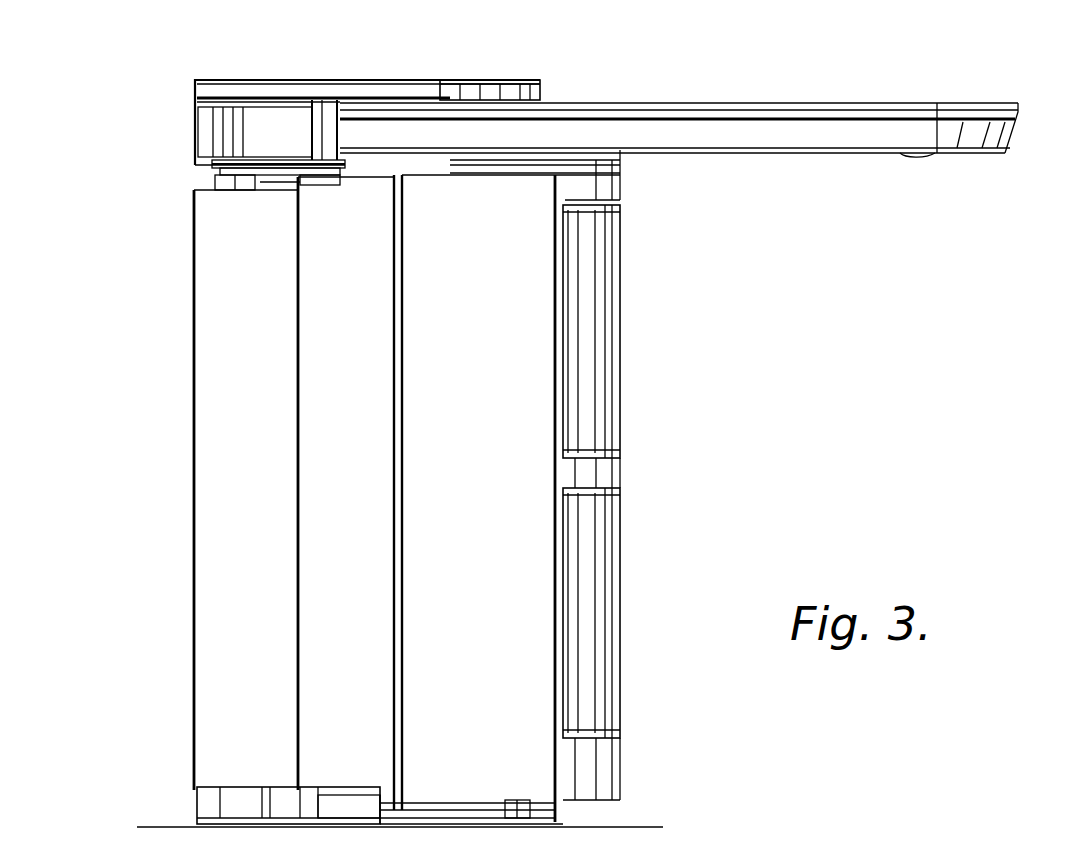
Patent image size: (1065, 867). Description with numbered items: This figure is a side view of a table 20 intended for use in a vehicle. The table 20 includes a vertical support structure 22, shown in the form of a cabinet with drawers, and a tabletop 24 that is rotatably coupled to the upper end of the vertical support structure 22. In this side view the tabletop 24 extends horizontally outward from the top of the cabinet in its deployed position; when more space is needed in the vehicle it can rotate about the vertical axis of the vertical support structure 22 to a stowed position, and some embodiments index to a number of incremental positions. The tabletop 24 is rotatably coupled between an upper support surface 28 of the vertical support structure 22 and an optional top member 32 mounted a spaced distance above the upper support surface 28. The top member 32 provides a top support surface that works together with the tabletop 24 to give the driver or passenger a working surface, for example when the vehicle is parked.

The table 20 is at (147, 138).
The vertical support structure 22 is at (218, 486).
The tabletop 24 is at (934, 106).
The upper support surface 28 is at (555, 165).
The top member 32 is at (456, 92).